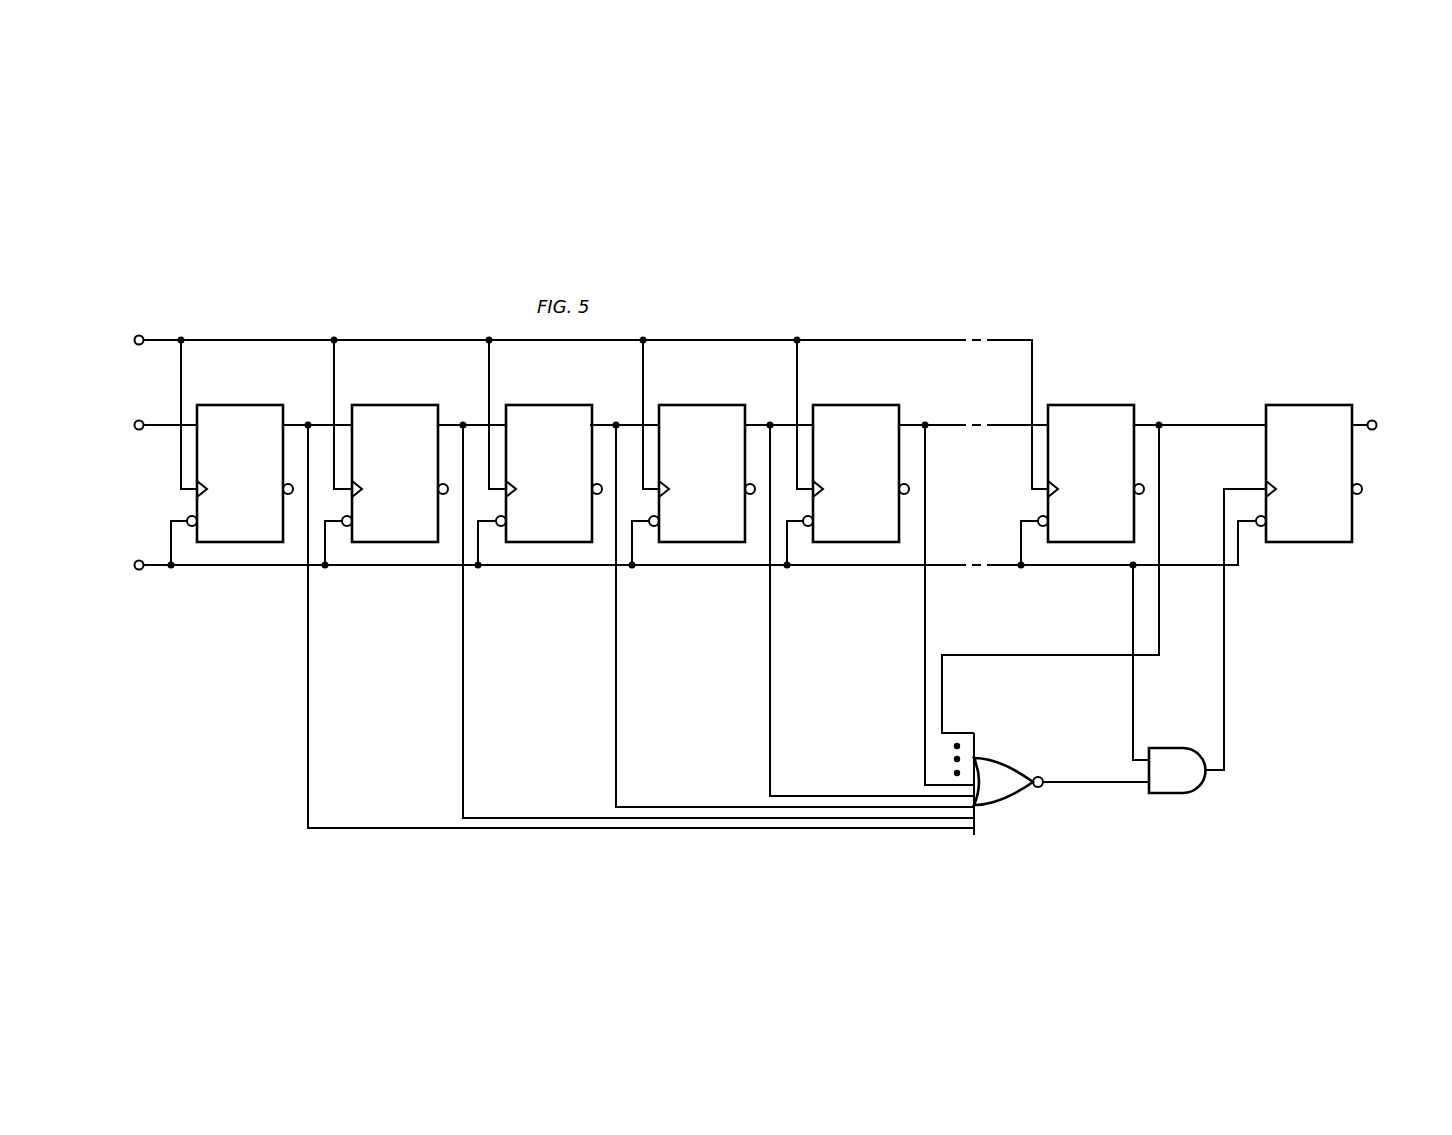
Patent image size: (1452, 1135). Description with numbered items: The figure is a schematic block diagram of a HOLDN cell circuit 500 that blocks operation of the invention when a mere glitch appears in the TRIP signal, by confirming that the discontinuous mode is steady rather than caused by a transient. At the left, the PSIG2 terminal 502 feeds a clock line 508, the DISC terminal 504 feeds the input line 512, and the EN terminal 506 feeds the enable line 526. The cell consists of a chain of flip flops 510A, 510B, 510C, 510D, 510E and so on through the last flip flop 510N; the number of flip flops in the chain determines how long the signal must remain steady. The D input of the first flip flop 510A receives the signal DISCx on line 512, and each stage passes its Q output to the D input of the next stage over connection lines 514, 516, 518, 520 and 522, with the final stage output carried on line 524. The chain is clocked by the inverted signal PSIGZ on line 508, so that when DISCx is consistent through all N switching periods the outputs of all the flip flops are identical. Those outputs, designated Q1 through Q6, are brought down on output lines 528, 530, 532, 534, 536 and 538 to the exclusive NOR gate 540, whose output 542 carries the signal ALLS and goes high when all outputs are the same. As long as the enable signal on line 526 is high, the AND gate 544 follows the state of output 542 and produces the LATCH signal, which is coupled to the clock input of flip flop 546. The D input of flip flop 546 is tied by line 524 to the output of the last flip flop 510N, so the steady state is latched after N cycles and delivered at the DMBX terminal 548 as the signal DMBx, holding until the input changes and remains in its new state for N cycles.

The HOLDN cell circuit 500 is at (758, 550).
The PSIG2 input terminal 502 is at (113, 317).
The DISC input terminal 504 is at (117, 402).
The EN input terminal 506 is at (125, 588).
The PSIG2 clock line 508 is at (596, 387).
The flip flop 510A is at (232, 452).
The flip flop 510B is at (386, 452).
The flip flop 510C is at (540, 452).
The flip-flop FF4 510D is at (693, 452).
The flip-flop FF5 510E is at (848, 452).
The flip flop 510N is at (1082, 452).
The DISC input line 512 is at (162, 450).
The Q1 connection line 514 is at (317, 400).
The Q2 connection line 516 is at (471, 400).
The Q3 connection line 518 is at (624, 400).
The Q4 connection line 520 is at (778, 400).
The Q5 connection line 522 is at (973, 400).
The line 524 is at (1200, 400).
The EN clear line 526 is at (700, 570).
The Q1 output line 528 is at (607, 626).
The Q2 output line 530 is at (683, 621).
The Q3 output line 532 is at (760, 616).
The Q4 output line 534 is at (838, 610).
The Q5 output line 536 is at (915, 605).
The Q6 output line 538 is at (1066, 579).
The exclusive NOR gate 540 is at (1001, 791).
The output of the exclusive NOR gate 542 is at (1096, 796).
The AND gate 544 is at (1210, 668).
The flip flop 546 is at (1309, 447).
The DMBX output terminal 548 is at (1394, 400).